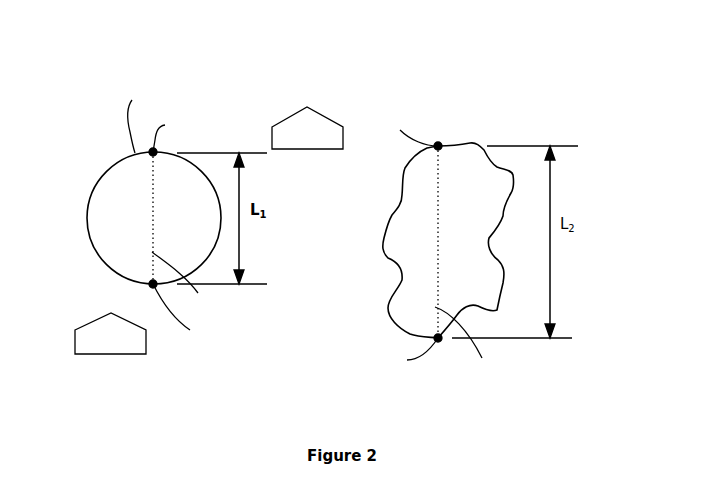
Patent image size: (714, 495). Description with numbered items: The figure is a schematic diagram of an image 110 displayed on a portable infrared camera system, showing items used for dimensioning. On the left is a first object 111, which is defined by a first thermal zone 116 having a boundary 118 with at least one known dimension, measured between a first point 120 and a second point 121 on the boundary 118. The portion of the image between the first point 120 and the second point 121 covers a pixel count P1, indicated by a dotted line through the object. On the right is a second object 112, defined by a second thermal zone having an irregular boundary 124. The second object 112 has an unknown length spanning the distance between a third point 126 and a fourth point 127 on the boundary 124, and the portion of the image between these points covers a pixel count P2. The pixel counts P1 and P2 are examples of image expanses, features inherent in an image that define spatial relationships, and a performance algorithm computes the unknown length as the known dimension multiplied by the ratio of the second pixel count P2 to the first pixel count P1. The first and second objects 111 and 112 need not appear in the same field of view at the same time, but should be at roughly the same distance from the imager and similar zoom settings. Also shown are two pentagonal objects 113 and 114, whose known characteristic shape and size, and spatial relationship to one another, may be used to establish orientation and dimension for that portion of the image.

The image 110 is at (432, 97).
The first object 111 is at (154, 218).
The second object 112 is at (448, 240).
The object 113 is at (110, 333).
The object 114 is at (307, 128).
The first thermal zone 116 is at (96, 131).
The boundary 118 is at (150, 122).
The first point 120 is at (180, 138).
The second point 121 is at (183, 313).
The boundary 124 is at (477, 129).
The third point 126 is at (412, 133).
The fourth point 127 is at (408, 351).
The pixel count P1 is at (181, 281).
The pixel count P2 is at (466, 340).